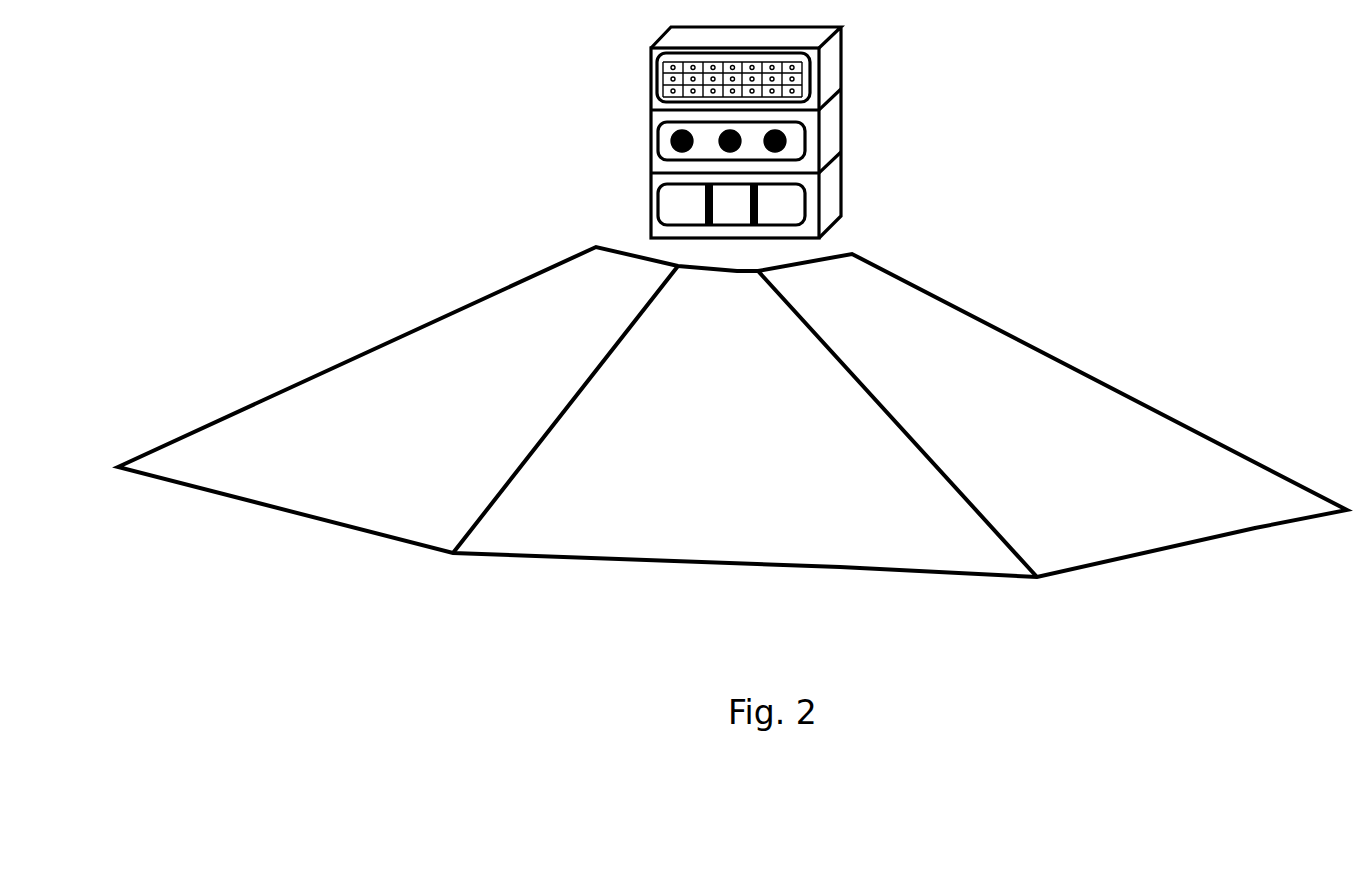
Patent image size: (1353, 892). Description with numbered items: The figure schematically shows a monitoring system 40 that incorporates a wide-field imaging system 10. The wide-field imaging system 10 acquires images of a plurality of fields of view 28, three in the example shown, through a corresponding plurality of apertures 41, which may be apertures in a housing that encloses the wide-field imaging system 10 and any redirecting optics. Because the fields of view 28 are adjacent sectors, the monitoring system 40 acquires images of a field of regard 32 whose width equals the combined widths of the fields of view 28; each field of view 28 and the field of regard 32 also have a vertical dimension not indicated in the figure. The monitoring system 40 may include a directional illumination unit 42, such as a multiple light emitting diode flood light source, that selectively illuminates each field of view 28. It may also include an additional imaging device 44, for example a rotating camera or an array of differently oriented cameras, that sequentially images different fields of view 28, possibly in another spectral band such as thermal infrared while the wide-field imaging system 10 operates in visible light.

The wide-field imaging system 10 is at (650, 145).
The fields of view 28 is at (628, 415).
The field of regard 32 is at (1070, 314).
The monitoring system 40 is at (272, 84).
The apertures 41 is at (778, 140).
The directional illumination unit 42 is at (650, 77).
The imaging device 44 is at (650, 203).